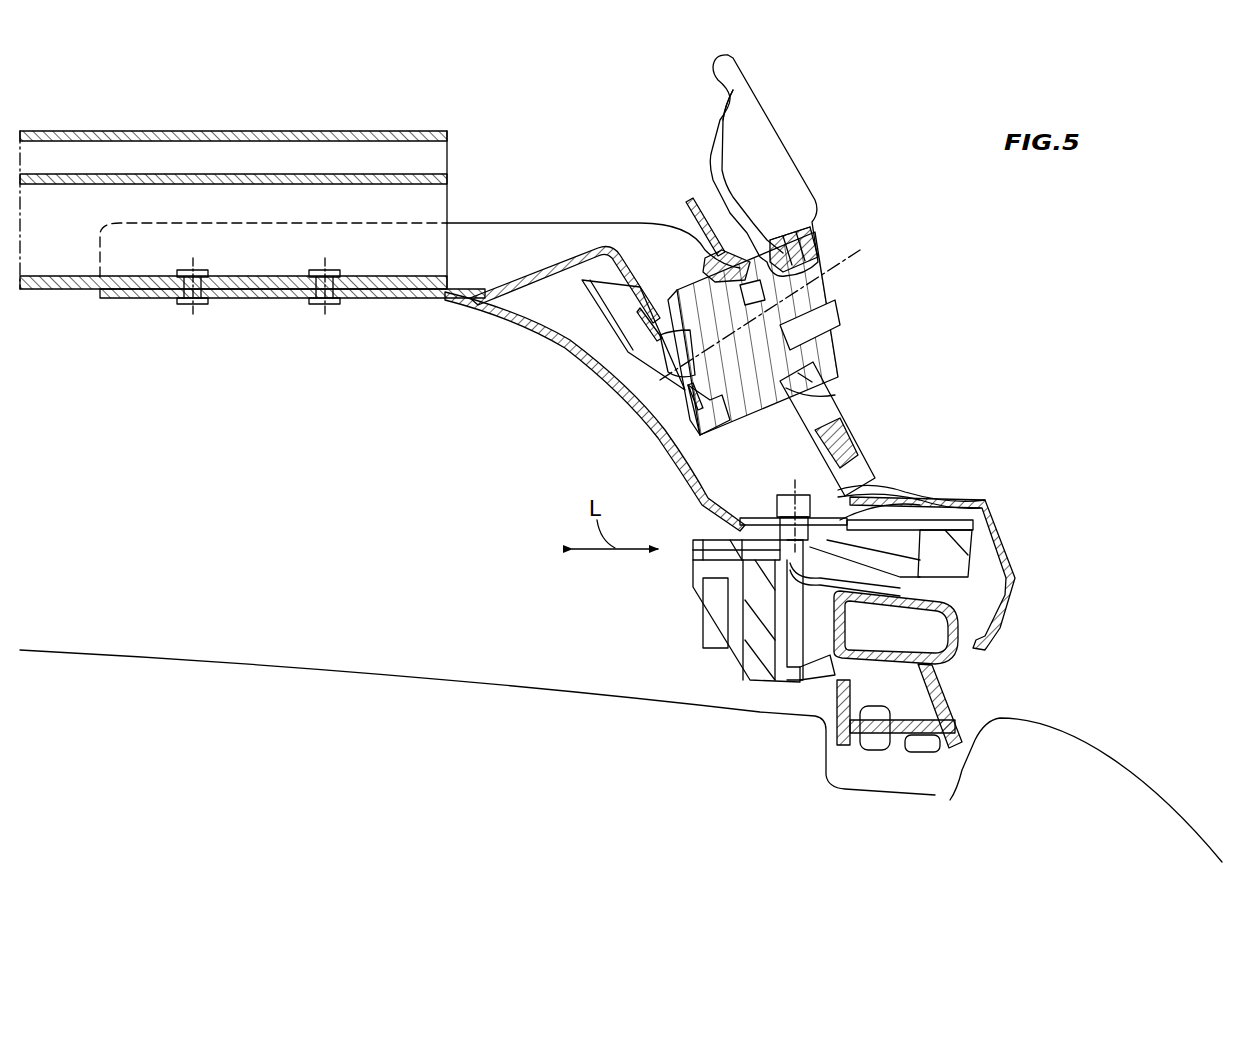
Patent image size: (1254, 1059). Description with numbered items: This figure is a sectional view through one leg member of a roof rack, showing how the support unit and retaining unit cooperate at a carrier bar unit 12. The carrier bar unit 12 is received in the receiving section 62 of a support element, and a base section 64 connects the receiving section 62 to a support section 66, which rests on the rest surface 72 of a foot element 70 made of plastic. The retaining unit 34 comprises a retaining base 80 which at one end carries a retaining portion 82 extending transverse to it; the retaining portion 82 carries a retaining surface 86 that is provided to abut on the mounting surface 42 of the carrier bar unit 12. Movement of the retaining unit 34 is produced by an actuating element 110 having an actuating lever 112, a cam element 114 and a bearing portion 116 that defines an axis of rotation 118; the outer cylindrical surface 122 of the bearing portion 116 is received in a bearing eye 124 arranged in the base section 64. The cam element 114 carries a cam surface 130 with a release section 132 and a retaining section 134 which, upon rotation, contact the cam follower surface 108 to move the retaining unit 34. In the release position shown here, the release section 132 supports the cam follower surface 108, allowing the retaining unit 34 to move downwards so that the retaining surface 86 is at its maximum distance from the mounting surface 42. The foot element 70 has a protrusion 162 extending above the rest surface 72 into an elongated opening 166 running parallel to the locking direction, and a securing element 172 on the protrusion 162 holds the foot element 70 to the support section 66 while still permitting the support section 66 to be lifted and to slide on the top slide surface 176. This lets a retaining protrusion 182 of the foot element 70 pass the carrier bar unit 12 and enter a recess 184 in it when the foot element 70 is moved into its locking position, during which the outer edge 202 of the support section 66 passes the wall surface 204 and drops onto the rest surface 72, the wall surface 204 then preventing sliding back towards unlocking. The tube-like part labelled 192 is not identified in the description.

The carrier bar unit 12 is at (1010, 598).
The retaining unit 34 is at (870, 465).
The mounting surface 42 is at (960, 660).
The receiving section 62 is at (393, 296).
The base section 64 is at (712, 500).
The support section 66 is at (860, 525).
The foot element 70 is at (760, 600).
The rest surface 72 is at (855, 512).
The retaining base 80 is at (992, 530).
The retaining portion 82 is at (985, 655).
The retaining surface 86 is at (993, 638).
The cam follower surface 108 is at (800, 265).
The actuating element 110 is at (793, 150).
The actuating lever 112 is at (745, 117).
The cam element 114 is at (795, 352).
The bearing portion 116 is at (665, 410).
The axis of rotation 118 is at (845, 270).
The outer cylindrical surface 122 is at (668, 432).
The bearing eye 124 is at (622, 360).
The cam surface 130 is at (825, 385).
The release section 132 is at (700, 283).
The retaining section 134 is at (800, 374).
The protrusion 162 is at (785, 540).
The elongated opening 166 is at (850, 505).
The securing element 172 is at (760, 523).
The top slide surface 176 is at (985, 505).
The retaining protrusion 182 is at (823, 653).
The recess 184 is at (830, 673).
The tube 192 is at (868, 588).
The outer edge 202 is at (940, 505).
The wall surface 204 is at (990, 558).